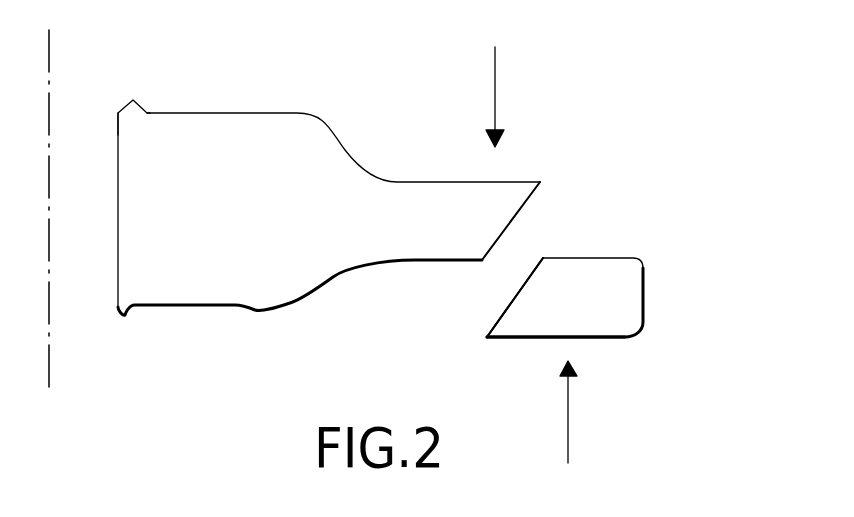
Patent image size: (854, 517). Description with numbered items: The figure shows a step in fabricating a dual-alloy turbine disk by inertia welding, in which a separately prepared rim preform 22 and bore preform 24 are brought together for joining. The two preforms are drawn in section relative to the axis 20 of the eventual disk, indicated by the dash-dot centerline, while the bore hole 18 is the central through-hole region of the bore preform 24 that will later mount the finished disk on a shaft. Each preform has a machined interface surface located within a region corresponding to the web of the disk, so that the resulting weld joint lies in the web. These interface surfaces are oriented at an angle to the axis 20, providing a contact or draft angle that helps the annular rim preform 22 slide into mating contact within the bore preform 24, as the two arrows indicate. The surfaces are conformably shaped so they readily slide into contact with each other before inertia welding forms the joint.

The bore hole 18 is at (118, 136).
The axis 20 is at (50, 66).
The rim preform 22 is at (636, 265).
The bore preform 24 is at (323, 148).